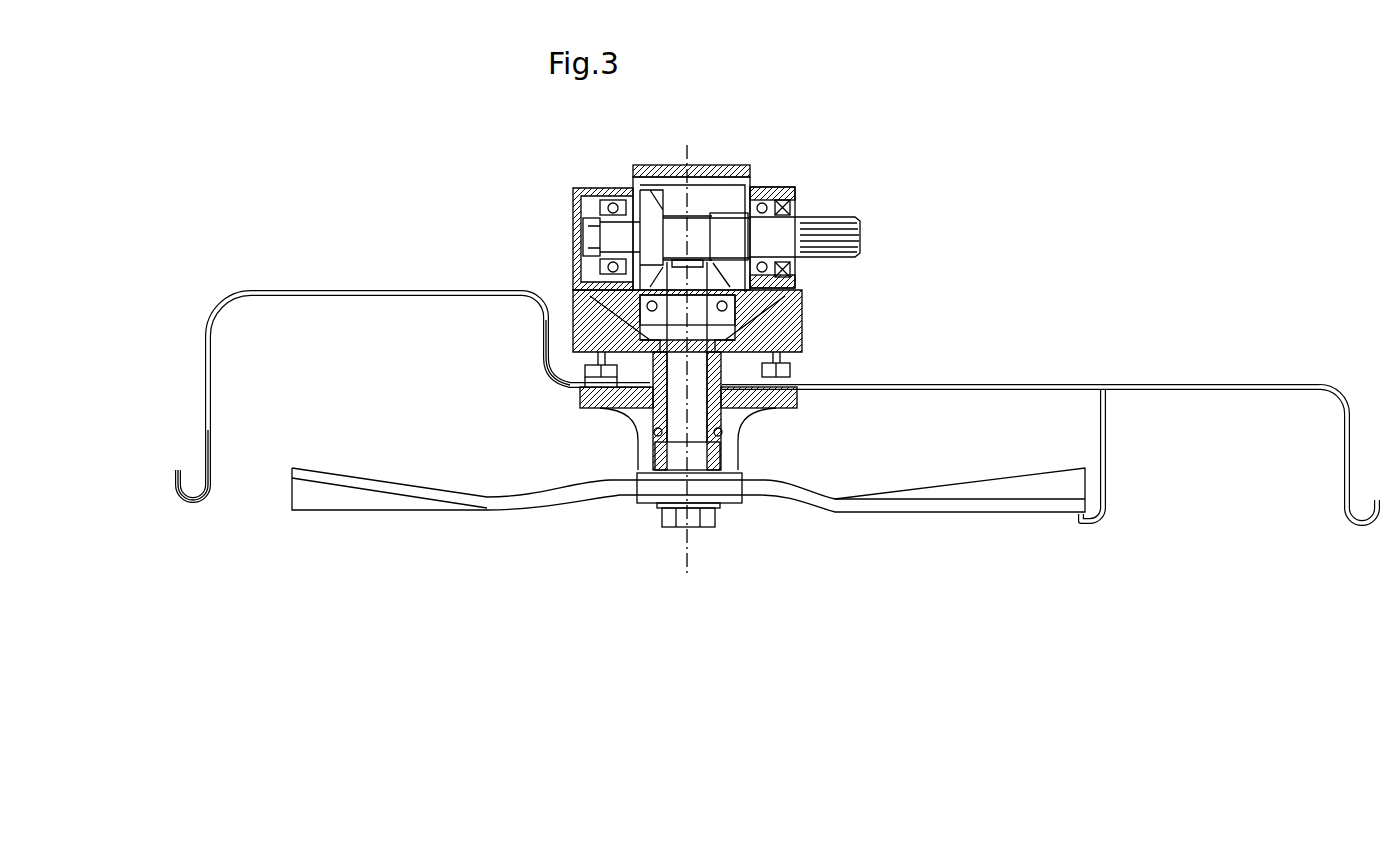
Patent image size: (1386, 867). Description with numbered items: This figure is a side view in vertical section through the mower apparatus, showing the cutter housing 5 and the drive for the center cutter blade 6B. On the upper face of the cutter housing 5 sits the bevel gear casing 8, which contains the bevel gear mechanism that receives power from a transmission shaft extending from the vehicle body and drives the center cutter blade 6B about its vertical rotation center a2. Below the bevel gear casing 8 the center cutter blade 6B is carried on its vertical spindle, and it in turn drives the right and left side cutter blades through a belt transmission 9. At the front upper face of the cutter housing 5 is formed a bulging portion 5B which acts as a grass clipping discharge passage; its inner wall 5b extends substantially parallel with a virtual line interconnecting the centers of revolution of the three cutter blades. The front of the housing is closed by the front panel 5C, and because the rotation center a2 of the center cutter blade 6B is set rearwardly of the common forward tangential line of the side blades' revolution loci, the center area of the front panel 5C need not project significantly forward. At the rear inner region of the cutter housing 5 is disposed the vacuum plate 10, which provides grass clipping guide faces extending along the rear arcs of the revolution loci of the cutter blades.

The cutter housing 5 is at (1030, 383).
The bulging portion 5B is at (372, 290).
The inner wall 5b is at (541, 336).
The front panel 5C is at (211, 418).
The center cutter blade 6B is at (882, 512).
The bevel gear casing 8 is at (770, 192).
The belt transmission 9 is at (808, 312).
The vacuum plate 10 is at (1106, 458).
The rotation center a2 is at (683, 558).